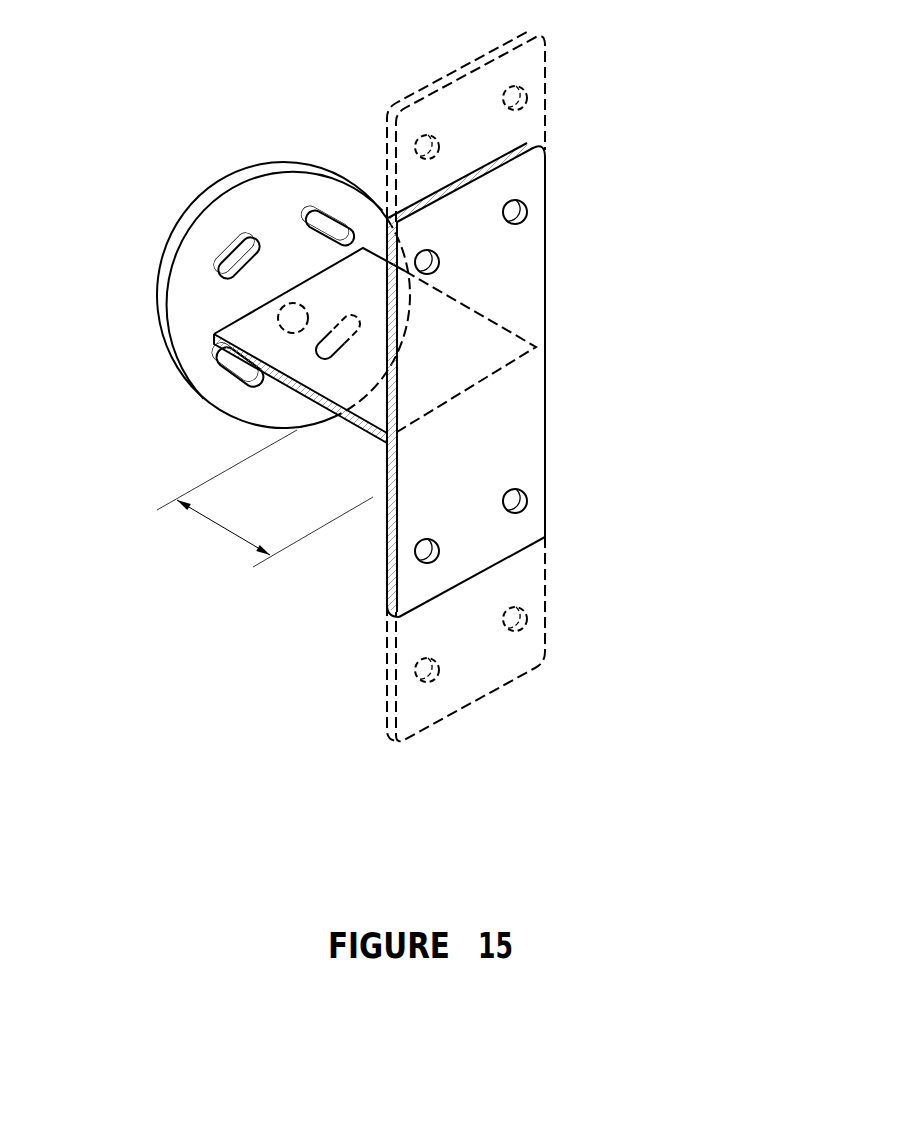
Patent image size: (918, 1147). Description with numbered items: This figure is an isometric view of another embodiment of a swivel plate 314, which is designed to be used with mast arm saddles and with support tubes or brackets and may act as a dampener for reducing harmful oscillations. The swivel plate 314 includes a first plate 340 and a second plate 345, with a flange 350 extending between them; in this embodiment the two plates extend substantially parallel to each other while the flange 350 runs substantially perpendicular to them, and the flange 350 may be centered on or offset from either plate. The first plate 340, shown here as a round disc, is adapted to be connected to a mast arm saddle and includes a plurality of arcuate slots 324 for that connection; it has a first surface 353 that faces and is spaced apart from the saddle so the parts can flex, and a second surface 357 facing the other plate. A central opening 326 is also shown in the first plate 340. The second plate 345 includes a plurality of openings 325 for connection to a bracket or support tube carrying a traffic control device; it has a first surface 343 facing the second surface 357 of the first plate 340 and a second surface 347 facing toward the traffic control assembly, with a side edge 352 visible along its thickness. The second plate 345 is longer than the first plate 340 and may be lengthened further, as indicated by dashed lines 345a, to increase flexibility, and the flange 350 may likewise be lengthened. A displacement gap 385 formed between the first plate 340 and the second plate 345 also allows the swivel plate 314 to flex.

The swivel plate 314 is at (637, 297).
The arcuate slots 324 is at (237, 368).
The openings 325 is at (515, 499).
The center hole 326 is at (293, 318).
The first plate 340 is at (243, 173).
The first surface 343 is at (423, 203).
The second plate 345 is at (502, 430).
The dashed lines 345a is at (447, 78).
The second surface 347 is at (452, 213).
The flange 350 is at (350, 412).
The side edge of mounting plate 352 is at (387, 537).
The first surface 353 is at (160, 270).
The second surface 357 is at (215, 238).
The displacement gap 385 is at (222, 528).